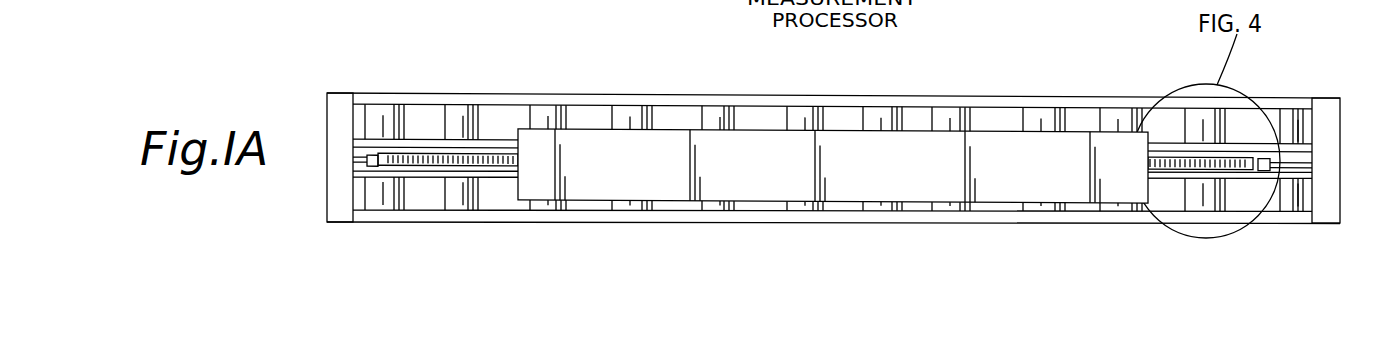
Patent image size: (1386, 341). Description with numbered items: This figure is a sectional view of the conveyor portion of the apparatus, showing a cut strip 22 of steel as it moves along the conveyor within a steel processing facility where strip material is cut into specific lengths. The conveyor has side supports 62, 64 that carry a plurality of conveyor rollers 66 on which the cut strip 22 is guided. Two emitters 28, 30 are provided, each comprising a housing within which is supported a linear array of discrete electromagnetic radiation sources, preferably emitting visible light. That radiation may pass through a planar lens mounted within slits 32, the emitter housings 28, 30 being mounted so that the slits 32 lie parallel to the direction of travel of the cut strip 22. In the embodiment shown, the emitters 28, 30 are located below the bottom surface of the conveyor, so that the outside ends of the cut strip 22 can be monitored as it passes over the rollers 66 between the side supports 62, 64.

The cut strip 22 is at (537, 142).
The emitter 28 is at (1193, 174).
The emitter 30 is at (435, 172).
The slit 32 is at (395, 98).
The side support 62 is at (818, 100).
The side support 64 is at (820, 215).
The conveyor roller 66 is at (630, 118).